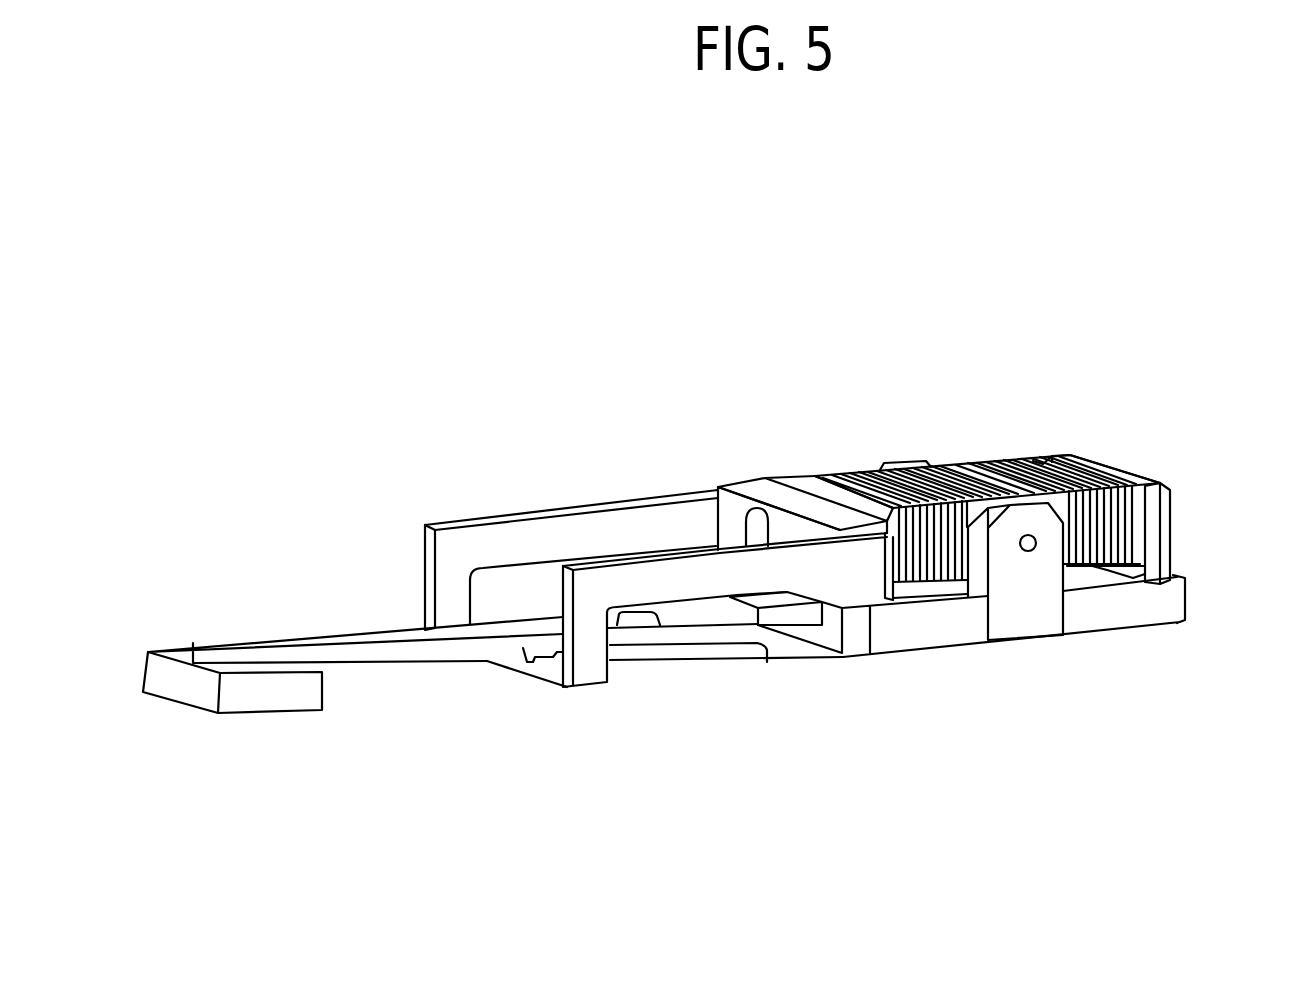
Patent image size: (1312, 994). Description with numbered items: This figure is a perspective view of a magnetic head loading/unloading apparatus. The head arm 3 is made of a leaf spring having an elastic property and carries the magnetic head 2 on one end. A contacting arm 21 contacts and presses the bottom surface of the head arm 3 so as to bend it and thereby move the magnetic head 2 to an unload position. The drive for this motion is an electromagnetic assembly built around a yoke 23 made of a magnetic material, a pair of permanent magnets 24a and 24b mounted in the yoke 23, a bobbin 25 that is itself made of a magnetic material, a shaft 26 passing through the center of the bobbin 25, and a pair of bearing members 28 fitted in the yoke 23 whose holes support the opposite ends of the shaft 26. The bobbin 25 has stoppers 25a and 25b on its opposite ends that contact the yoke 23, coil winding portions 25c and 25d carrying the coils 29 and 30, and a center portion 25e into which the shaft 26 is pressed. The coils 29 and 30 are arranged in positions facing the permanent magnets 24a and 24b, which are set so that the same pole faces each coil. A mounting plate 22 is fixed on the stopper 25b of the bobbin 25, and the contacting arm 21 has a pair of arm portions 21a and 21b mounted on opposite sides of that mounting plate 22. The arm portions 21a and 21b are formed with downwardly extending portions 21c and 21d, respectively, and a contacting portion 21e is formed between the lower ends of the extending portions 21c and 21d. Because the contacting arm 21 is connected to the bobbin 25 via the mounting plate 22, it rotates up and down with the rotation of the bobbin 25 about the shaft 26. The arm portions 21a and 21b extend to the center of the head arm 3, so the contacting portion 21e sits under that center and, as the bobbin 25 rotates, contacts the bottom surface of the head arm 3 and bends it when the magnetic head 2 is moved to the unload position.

The magnetic head 2 is at (255, 705).
The head arm 3 is at (440, 655).
The contacting arm 21 is at (604, 623).
The arm portion 21a is at (687, 585).
The arm portion 21b is at (557, 523).
The downwardly extending portion 21c is at (607, 653).
The downwardly extending portion 21d is at (443, 583).
The contacting portion 21e is at (520, 675).
The mounting plate 22 is at (766, 450).
The yoke 23 is at (1177, 622).
The permanent magnet 24a is at (1110, 565).
The permanent magnet 24b is at (800, 612).
The bobbin 25 is at (1015, 453).
The stopper 25a is at (1127, 467).
The stopper 25b is at (782, 481).
The coil winding portion 25c is at (1075, 460).
The coil winding portion 25d is at (828, 487).
The center portion 25e is at (947, 477).
The shaft 26 is at (1033, 551).
The bearing member 28 is at (1013, 538).
The coil 29 is at (882, 468).
The coil 30 is at (1033, 457).